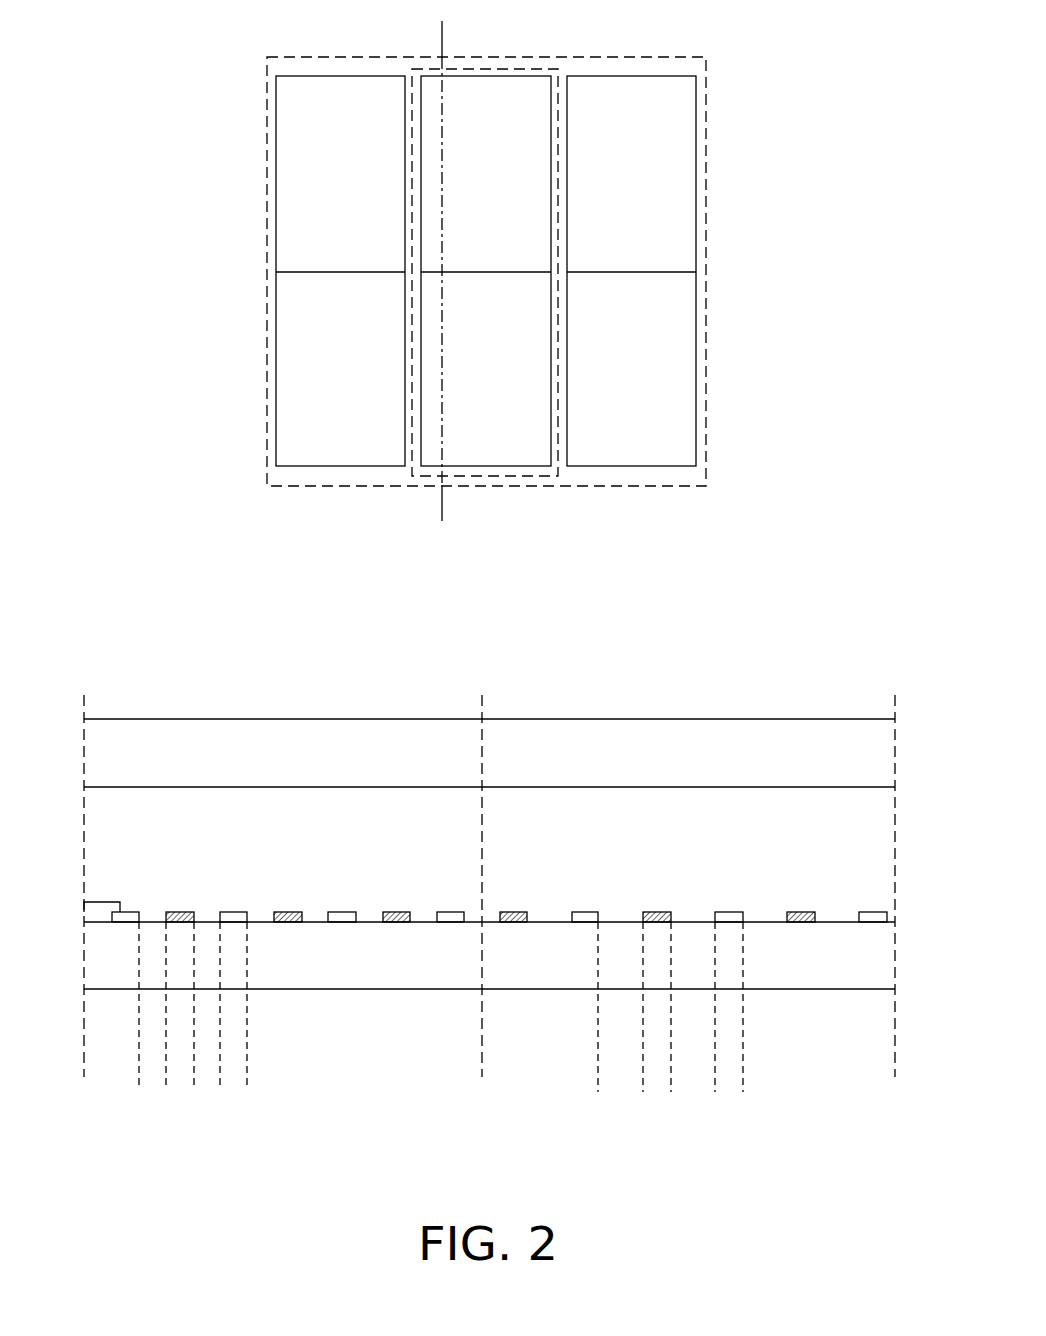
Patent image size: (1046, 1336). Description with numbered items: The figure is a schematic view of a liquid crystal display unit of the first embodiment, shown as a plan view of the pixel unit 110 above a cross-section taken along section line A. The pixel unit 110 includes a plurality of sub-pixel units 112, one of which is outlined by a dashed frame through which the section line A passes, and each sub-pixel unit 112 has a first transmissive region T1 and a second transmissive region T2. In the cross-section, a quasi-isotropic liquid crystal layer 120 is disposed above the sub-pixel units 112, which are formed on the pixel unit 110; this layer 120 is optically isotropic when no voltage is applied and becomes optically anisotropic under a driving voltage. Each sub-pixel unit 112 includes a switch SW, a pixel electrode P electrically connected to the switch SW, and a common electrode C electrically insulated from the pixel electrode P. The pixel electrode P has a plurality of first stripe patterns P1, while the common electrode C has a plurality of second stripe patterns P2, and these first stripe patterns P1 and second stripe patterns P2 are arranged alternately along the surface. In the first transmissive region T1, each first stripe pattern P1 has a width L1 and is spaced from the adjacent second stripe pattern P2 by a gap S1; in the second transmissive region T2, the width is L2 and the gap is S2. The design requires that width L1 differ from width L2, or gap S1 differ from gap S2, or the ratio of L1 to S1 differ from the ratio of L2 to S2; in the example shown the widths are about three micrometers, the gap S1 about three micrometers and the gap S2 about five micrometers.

The pixel unit 110 is at (706, 250).
The sub-pixel unit 112 is at (551, 476).
The quasi-isotropic liquid crystal layer 120 is at (903, 787).
The switch SW is at (92, 913).
The first stripe pattern P1 is at (127, 912).
The second stripe pattern P2 is at (182, 922).
The pixel electrode P is at (420, 832).
The common electrode C is at (267, 1027).
The first transmissive region T1 is at (84, 707).
The second transmissive region T2 is at (895, 707).
The gap in the first transmissive region S1 is at (139, 1078).
The width of the first stripe pattern in the first transmissive region L1 is at (166, 1078).
The gap in the second transmissive region S2 is at (598, 1078).
The width of the first stripe pattern in the second transmissive region L2 is at (643, 1078).
The section line A-A' A is at (442, 21).